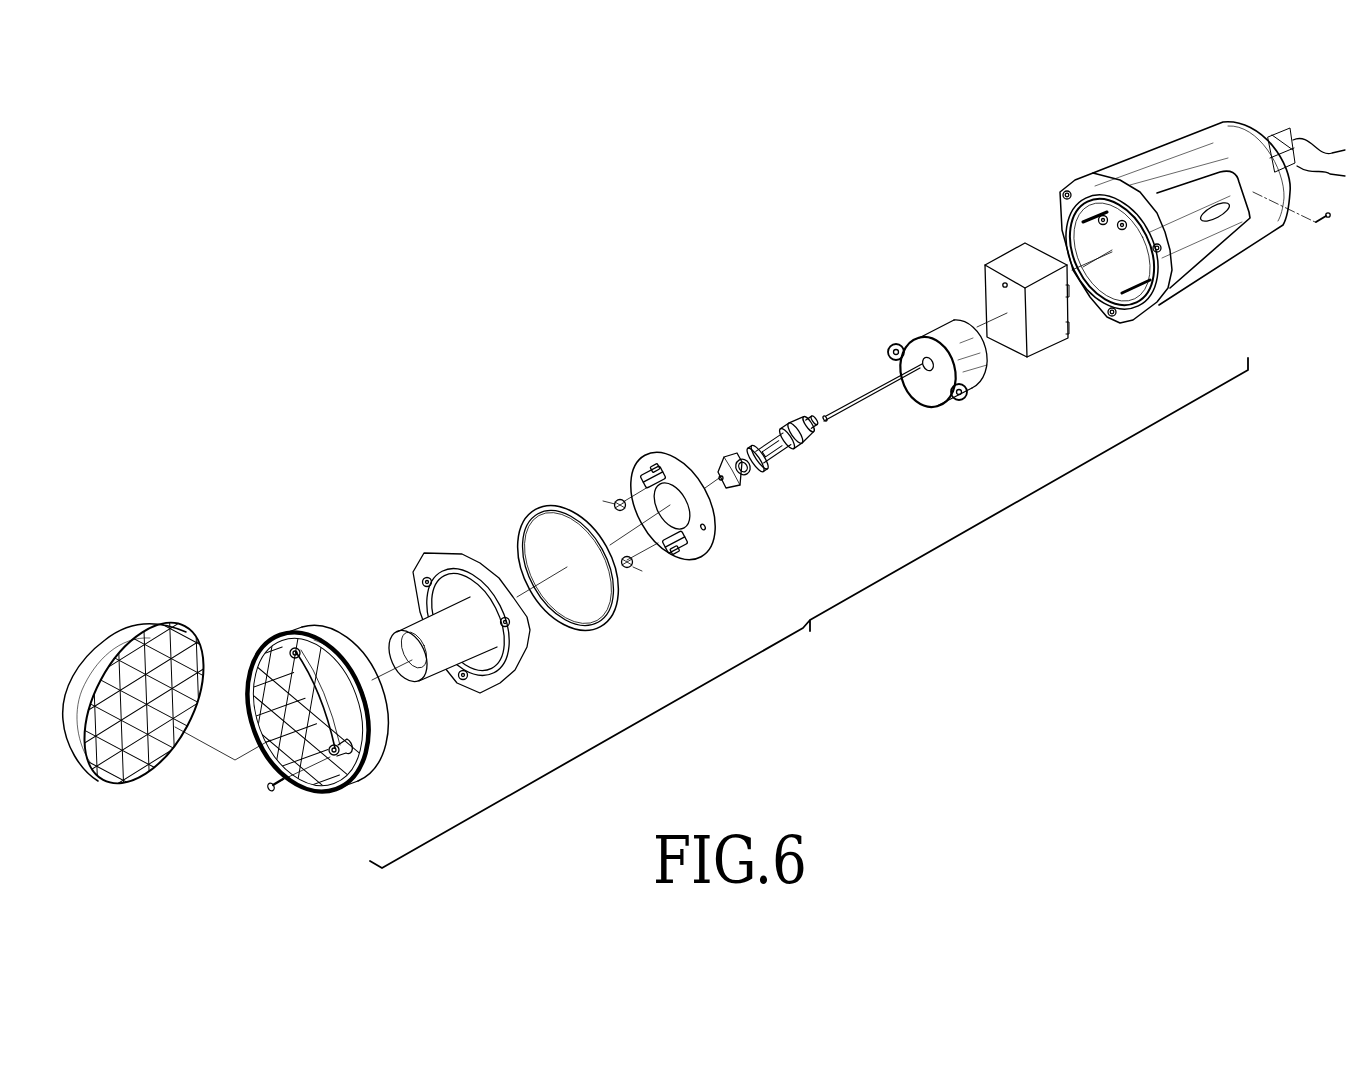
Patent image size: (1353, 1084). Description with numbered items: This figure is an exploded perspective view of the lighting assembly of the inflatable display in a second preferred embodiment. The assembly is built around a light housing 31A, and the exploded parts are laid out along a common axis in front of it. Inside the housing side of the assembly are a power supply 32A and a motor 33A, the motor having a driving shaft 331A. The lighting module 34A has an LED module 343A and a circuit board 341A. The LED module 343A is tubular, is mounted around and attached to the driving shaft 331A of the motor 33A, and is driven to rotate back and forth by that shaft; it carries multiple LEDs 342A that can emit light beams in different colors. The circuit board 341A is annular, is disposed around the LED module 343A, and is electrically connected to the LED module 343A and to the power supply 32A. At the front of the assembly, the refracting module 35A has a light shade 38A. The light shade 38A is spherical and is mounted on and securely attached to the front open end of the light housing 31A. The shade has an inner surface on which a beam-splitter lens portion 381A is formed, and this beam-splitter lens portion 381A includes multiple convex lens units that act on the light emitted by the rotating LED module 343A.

The light housing 31A is at (1200, 133).
The power supply 32A is at (1007, 260).
The motor 33A is at (977, 388).
The driving shaft 331A is at (873, 393).
The lighting module 34A is at (748, 358).
The circuit board 341A is at (702, 548).
The LEDs 342A is at (753, 470).
The LED module 343A is at (798, 447).
The refracting module 35A is at (450, 381).
The light shade 38A is at (147, 630).
The beam-splitter lens portion 381A is at (132, 765).